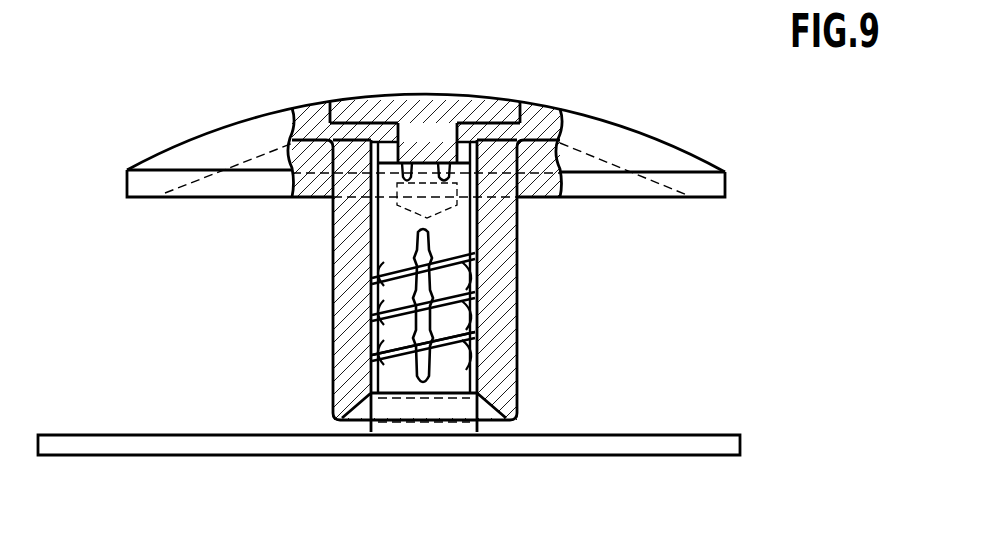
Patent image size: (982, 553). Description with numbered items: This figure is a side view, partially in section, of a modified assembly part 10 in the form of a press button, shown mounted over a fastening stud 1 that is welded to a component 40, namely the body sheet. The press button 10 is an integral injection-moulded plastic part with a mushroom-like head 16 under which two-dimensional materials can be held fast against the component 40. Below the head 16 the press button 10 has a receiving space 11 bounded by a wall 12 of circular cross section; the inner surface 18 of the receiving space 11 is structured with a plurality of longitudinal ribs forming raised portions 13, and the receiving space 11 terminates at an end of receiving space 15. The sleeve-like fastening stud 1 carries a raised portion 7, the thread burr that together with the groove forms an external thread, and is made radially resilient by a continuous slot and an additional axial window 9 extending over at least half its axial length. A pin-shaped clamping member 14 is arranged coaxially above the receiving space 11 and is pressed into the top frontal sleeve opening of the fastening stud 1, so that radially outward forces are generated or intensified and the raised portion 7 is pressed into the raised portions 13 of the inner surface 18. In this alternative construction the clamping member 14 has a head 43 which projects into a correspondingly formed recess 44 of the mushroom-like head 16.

The fastening stud 1 is at (455, 242).
The raised portion 7 is at (372, 318).
The axial window 9 is at (487, 322).
The assembly part 10 is at (262, 252).
The receiving space 11 is at (392, 404).
The wall 12 is at (502, 288).
The raised portion 13 is at (385, 362).
The clamping member 14 is at (422, 111).
The end of receiving space 15 is at (470, 111).
The mushroom-like head 16 is at (648, 150).
The inner surface 18 is at (465, 362).
The component 40 is at (685, 443).
The head 43 is at (370, 107).
The recess 44 is at (527, 112).